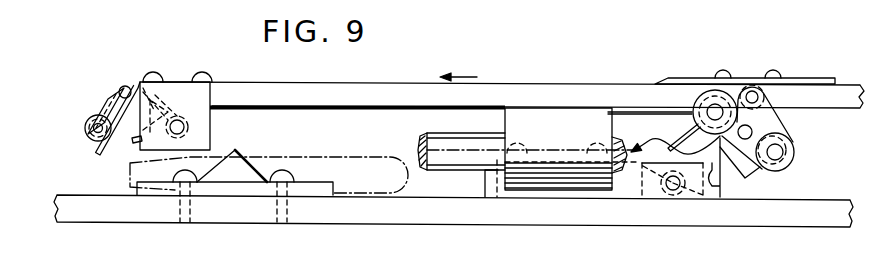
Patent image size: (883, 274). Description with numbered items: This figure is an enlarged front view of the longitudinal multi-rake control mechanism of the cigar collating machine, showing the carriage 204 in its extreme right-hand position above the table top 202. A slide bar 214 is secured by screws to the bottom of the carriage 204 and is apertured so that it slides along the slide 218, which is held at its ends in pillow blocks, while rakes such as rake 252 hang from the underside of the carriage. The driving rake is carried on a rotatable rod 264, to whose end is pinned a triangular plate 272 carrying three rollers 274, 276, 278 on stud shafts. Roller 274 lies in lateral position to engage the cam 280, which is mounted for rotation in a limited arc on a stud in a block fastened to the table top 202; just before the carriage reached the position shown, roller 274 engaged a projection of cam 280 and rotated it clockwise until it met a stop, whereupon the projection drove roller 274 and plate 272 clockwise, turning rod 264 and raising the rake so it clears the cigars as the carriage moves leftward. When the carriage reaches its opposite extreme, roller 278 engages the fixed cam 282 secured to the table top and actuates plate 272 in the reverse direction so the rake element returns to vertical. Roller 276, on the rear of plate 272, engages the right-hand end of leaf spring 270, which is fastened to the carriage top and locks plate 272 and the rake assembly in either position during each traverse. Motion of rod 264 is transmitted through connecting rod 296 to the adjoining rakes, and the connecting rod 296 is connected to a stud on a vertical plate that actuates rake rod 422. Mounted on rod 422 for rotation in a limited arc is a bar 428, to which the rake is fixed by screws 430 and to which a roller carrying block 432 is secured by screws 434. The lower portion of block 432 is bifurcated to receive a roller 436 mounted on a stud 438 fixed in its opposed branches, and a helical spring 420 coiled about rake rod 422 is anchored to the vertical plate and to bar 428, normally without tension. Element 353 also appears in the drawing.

The table top 202 is at (368, 217).
The carriage 204 is at (513, 86).
The slide bar 214 is at (558, 115).
The slide 218 is at (461, 170).
The rake 252 is at (680, 136).
The rod 264 is at (744, 125).
The leaf spring 270 is at (827, 81).
The plate 272 is at (785, 115).
The roller 274 is at (794, 152).
The roller 276 is at (767, 100).
The roller 278 is at (705, 90).
The cam 280 is at (721, 182).
The fixed cam 282 is at (237, 170).
The connecting rod 296 is at (328, 108).
The lever arm 353 is at (100, 156).
The helical spring 420 is at (188, 127).
The rake rod 422 is at (183, 122).
The bar 428 is at (178, 118).
The screws 430 is at (133, 87).
The roller carrying block 432 is at (108, 97).
The screws 434 is at (121, 86).
The roller 436 is at (92, 115).
The stud 438 is at (85, 128).